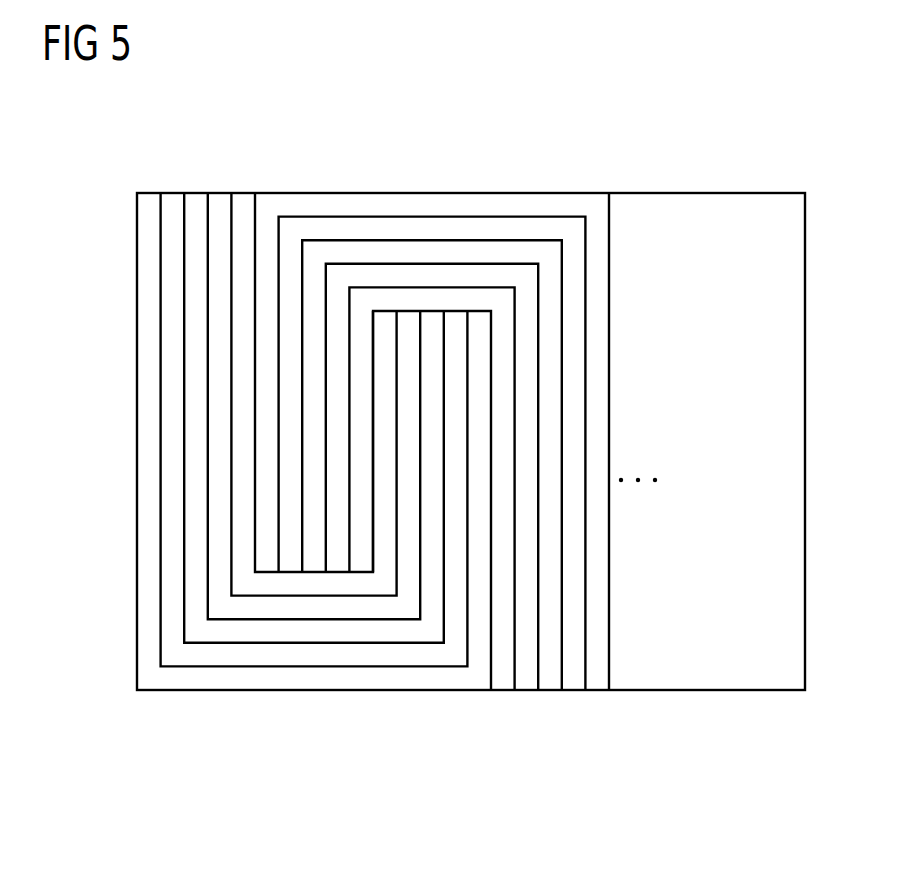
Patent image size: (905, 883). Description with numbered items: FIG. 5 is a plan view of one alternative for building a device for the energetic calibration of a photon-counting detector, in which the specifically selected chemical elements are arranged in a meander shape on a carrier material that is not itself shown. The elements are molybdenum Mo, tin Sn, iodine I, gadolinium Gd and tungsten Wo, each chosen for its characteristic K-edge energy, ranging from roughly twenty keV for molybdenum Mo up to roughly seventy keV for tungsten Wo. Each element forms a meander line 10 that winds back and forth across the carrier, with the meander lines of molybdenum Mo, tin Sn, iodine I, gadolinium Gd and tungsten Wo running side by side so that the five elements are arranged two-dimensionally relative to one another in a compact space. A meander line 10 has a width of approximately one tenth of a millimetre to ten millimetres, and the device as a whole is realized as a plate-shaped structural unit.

The meander line 10 is at (595, 303).
The molybdenum Mo is at (145, 203).
The tin Sn is at (172, 203).
The iodine I is at (197, 203).
The gadolinium Gd is at (219, 203).
The tungsten Wo is at (244, 203).